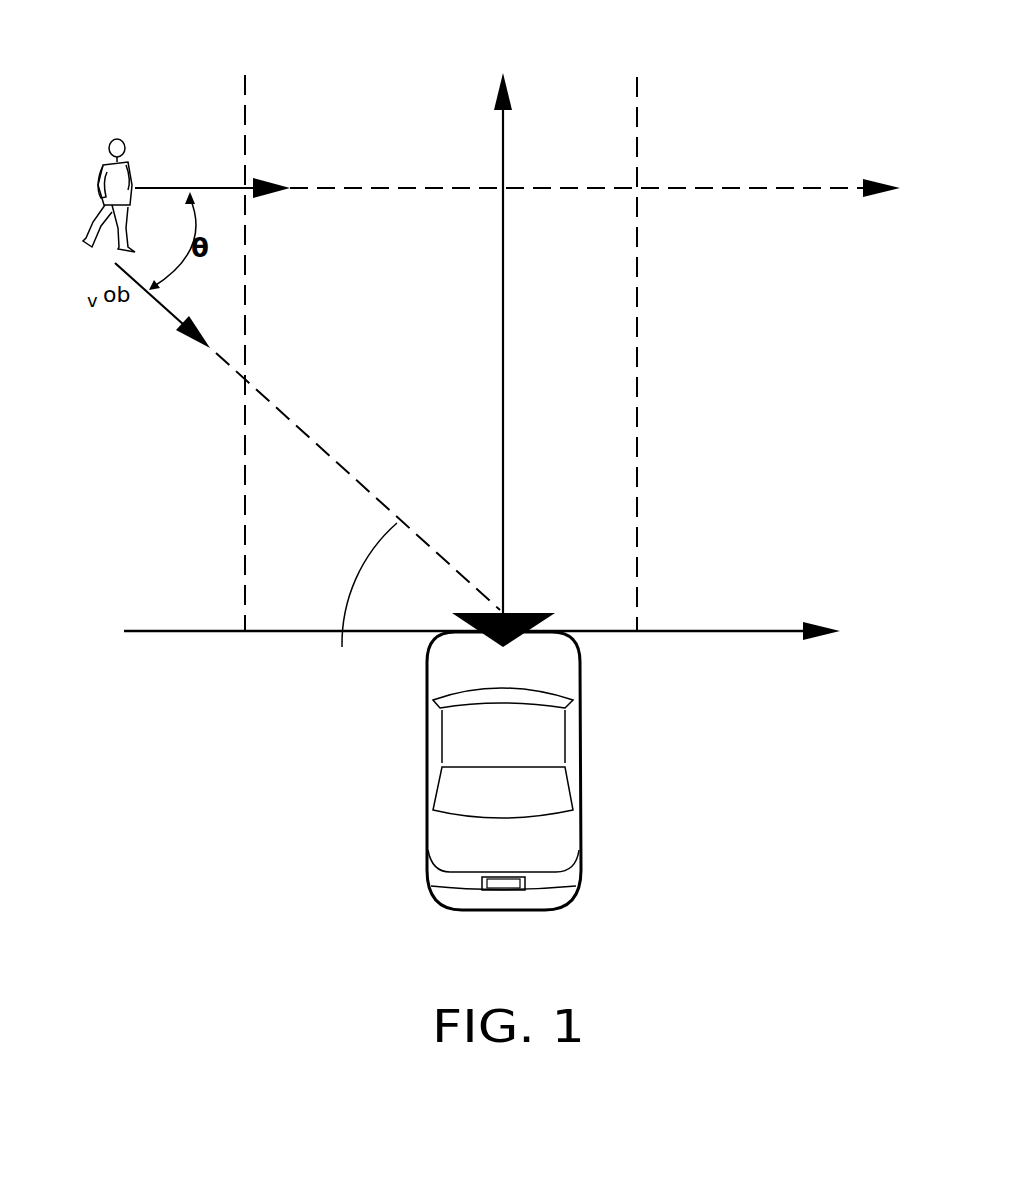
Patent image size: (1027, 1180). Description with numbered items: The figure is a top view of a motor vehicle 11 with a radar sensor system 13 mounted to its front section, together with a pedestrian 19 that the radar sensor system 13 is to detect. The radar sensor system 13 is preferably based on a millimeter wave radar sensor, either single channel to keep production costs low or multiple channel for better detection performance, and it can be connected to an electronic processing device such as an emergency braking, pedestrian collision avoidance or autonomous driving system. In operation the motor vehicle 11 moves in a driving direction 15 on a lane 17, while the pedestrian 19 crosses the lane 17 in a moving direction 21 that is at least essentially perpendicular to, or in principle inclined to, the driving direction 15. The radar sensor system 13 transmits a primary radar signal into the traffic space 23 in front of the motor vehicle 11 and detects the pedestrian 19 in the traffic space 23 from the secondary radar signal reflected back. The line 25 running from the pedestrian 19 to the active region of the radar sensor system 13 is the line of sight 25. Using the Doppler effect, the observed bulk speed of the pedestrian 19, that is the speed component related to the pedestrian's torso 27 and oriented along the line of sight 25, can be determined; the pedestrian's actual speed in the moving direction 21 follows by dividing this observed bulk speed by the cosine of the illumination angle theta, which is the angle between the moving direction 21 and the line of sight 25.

The motor vehicle 11 is at (580, 735).
The radar sensor system 13 is at (530, 615).
The driving direction 15 is at (505, 137).
The lane 17 is at (638, 115).
The pedestrian 19 is at (86, 164).
The moving direction 21 is at (802, 188).
The traffic space 23 is at (698, 381).
The line of sight 25 is at (362, 603).
The pedestrian's torso 27 is at (125, 173).